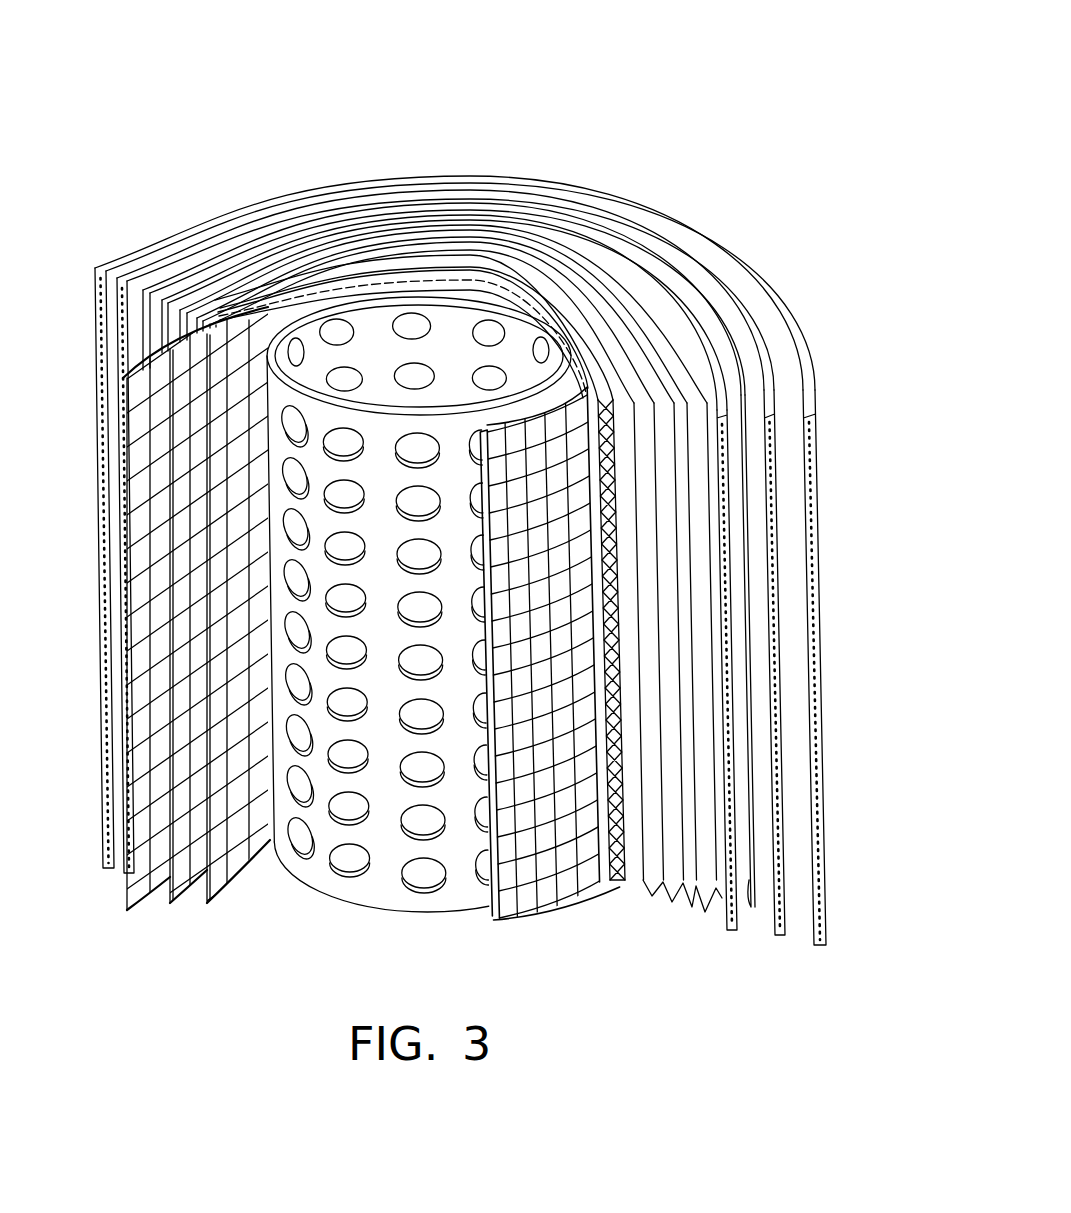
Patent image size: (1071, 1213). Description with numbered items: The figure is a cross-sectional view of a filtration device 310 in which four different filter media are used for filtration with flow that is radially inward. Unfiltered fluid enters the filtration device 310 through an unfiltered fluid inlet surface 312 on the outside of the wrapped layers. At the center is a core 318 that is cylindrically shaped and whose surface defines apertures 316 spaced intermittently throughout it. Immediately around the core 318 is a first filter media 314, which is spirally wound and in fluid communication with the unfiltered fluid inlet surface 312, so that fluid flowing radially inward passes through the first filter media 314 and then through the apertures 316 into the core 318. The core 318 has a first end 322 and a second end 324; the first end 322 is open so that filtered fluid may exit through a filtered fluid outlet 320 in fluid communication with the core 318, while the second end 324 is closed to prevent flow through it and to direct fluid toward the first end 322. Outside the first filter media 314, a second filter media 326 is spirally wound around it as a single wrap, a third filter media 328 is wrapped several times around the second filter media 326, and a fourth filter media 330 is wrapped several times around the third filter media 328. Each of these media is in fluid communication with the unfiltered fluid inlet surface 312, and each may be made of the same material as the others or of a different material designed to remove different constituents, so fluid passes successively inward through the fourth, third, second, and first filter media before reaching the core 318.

The filtration device 310 is at (722, 77).
The unfiltered fluid inlet surface 312 is at (813, 362).
The first filter media 314 is at (523, 918).
The apertures 316 is at (428, 877).
The core 318 is at (365, 895).
The filtered fluid outlet 320 is at (457, 317).
The first end 322 is at (274, 327).
The second end 324 is at (310, 880).
The second filter media 326 is at (637, 873).
The third filter media 328 is at (700, 890).
The fourth filter media 330 is at (820, 945).